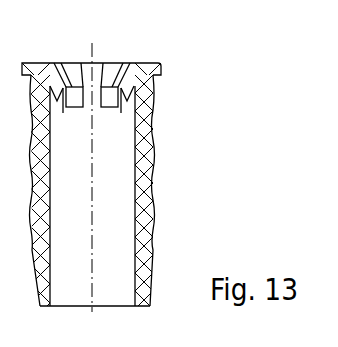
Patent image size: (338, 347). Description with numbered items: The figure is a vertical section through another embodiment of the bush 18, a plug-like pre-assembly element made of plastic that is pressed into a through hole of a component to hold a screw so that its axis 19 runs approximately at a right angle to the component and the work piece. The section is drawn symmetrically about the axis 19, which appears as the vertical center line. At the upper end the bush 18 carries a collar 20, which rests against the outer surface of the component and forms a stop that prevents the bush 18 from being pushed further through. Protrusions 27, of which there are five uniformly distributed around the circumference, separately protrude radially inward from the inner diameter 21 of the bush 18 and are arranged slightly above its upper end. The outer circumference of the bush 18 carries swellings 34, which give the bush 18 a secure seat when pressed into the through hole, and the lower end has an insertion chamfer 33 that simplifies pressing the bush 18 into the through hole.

The bush 18 is at (160, 111).
The axis 19 is at (92, 210).
The collar 20 is at (155, 68).
The inner diameter 21 is at (134, 273).
The protrusions 27 is at (74, 98).
The insertion chamfer 33 is at (123, 268).
The swellings 34 is at (156, 176).